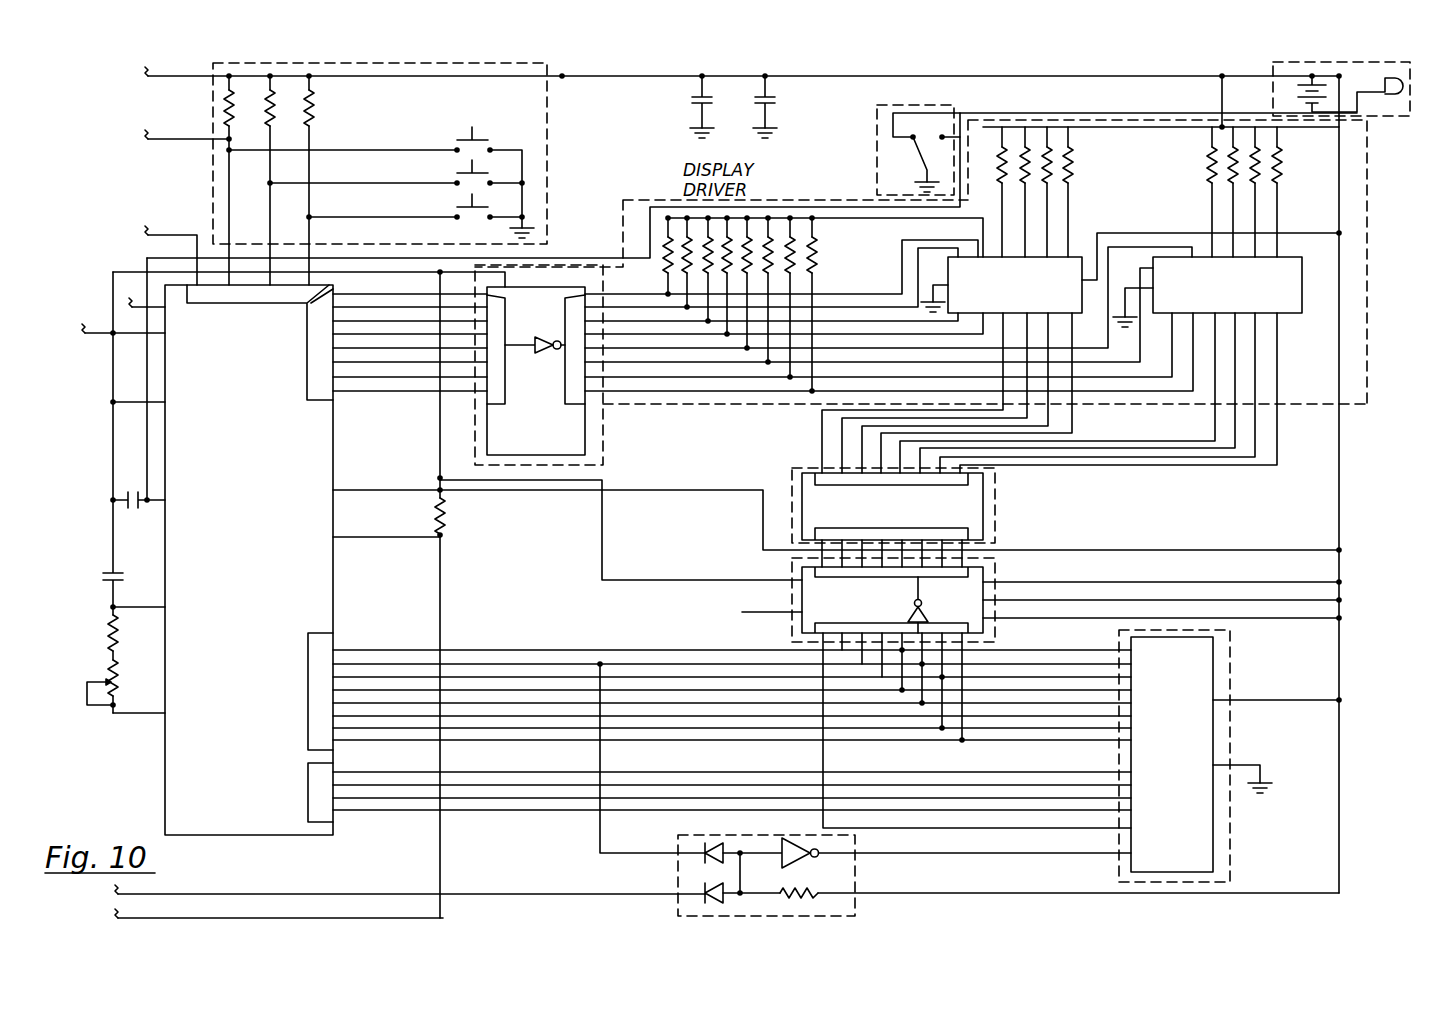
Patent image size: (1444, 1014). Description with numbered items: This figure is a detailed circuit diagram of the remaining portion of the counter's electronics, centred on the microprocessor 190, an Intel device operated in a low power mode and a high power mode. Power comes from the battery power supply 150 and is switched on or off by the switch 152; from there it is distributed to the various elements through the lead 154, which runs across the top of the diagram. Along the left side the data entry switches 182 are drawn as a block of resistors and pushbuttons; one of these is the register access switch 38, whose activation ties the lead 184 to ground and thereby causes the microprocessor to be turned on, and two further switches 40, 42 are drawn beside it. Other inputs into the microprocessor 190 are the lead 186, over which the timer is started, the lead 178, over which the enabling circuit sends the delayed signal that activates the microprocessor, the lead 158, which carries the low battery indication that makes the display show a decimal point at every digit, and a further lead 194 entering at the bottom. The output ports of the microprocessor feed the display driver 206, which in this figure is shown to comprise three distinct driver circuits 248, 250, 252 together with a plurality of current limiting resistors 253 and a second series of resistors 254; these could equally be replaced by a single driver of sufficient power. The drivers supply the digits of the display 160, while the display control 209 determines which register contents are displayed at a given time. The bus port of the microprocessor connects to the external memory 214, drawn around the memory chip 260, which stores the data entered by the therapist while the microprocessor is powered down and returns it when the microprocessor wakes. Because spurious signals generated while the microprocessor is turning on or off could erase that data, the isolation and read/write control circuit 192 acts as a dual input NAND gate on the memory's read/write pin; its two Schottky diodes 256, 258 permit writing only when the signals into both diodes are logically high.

The register access switch 38 is at (488, 140).
The switch 40 is at (458, 173).
The switch 42 is at (458, 207).
The battery power supply 150 is at (1383, 118).
The switch 152 is at (877, 150).
The lead 154 is at (150, 78).
The lead 158 is at (240, 922).
The display 160 is at (995, 528).
The lead 178 is at (97, 314).
The data entry switches 182 is at (347, 174).
The lead 184 is at (150, 141).
The lead 186 is at (155, 233).
The microprocessor 190 is at (335, 608).
The isolation and read/write control circuit 192 is at (971, 883).
The line 194 is at (220, 892).
The display driver 206 is at (1367, 290).
The display control 209 is at (792, 628).
The external memory 214 is at (1229, 756).
The driver circuit 248 is at (587, 437).
The driver circuit 250 is at (1072, 253).
The driver circuit 252 is at (1292, 313).
The current limiting resistors 253 is at (815, 262).
The resistors 254 is at (1205, 158).
The Schottky diode 256 is at (710, 845).
The Schottky diode 258 is at (705, 888).
The memory chip 74C89 260 is at (1135, 860).